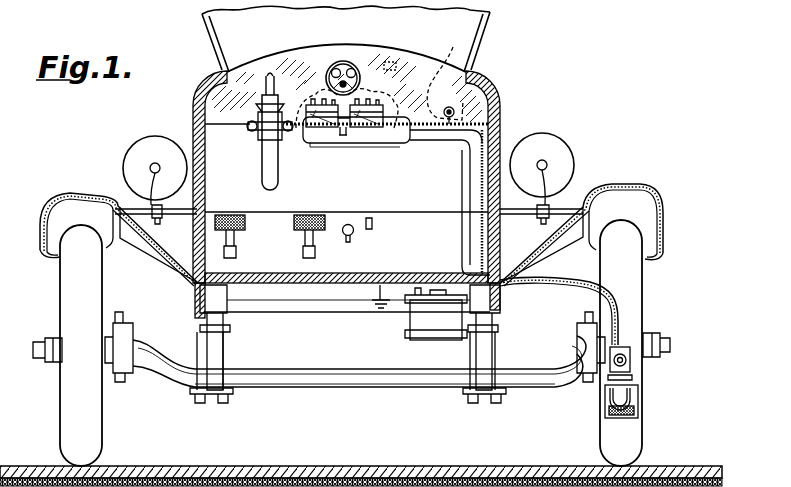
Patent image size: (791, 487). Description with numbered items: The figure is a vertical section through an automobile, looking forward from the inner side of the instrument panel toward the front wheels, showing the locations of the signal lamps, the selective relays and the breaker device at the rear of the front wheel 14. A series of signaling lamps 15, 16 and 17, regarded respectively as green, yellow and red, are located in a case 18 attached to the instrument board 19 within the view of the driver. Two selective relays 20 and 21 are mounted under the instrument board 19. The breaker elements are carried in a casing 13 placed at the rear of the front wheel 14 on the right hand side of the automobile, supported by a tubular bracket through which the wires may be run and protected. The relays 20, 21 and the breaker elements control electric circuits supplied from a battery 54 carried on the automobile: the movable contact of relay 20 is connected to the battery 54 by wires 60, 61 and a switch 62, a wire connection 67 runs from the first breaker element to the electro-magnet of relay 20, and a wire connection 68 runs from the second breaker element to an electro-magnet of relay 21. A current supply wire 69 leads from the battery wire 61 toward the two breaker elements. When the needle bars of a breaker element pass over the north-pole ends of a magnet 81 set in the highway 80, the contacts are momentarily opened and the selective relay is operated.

The casing 13 is at (630, 396).
The front wheel 14 is at (632, 279).
The lamp 15 is at (363, 79).
The lamp 16 is at (354, 73).
The lamp 17 is at (333, 70).
The case 18 is at (343, 60).
The instrument board 19 is at (268, 70).
The selective relay 20 is at (298, 132).
The selective relay 21 is at (410, 138).
The battery 54 is at (423, 326).
The wire 60 is at (455, 135).
The battery wire 61 is at (425, 73).
The switch 62 is at (455, 100).
The wire connection 67 is at (327, 150).
The wire connection 68 is at (430, 143).
The current supply wire 69 is at (490, 130).
The highway 80 is at (560, 476).
The magnet 81 is at (180, 480).